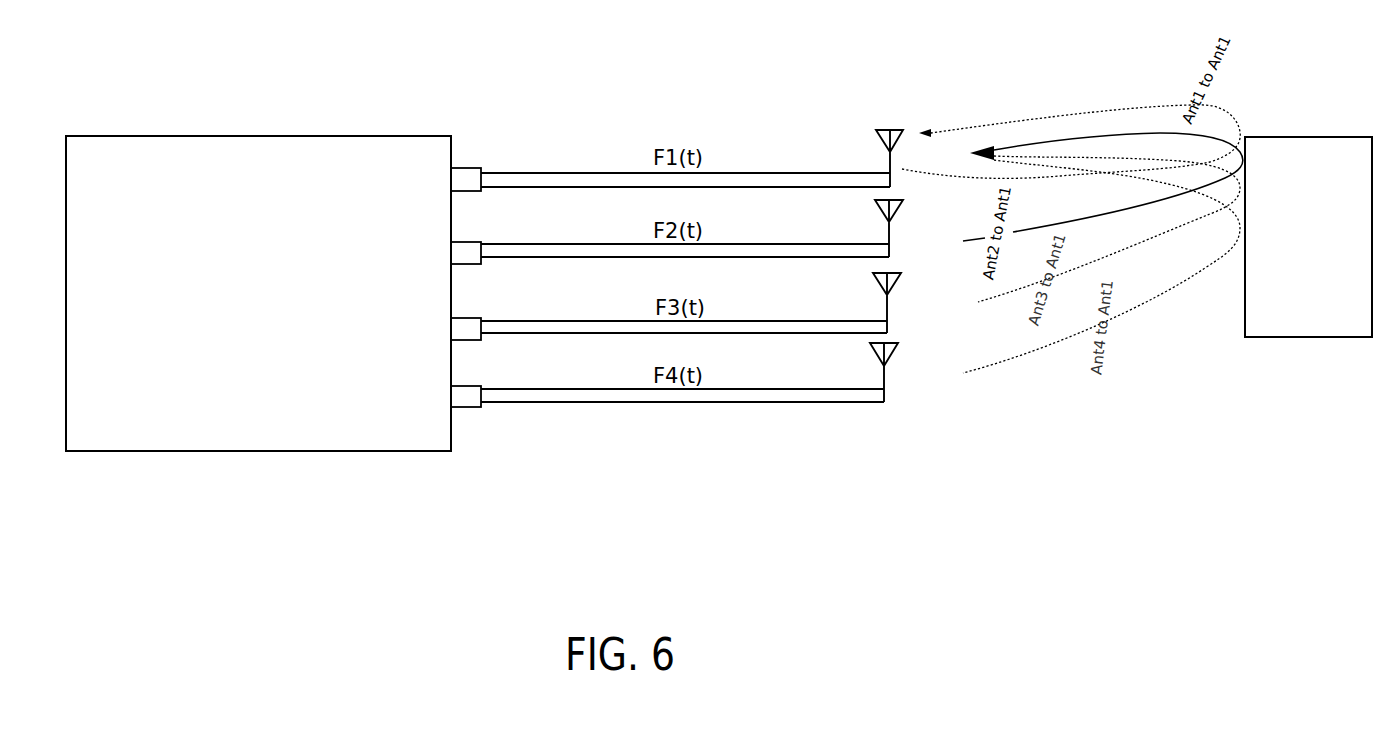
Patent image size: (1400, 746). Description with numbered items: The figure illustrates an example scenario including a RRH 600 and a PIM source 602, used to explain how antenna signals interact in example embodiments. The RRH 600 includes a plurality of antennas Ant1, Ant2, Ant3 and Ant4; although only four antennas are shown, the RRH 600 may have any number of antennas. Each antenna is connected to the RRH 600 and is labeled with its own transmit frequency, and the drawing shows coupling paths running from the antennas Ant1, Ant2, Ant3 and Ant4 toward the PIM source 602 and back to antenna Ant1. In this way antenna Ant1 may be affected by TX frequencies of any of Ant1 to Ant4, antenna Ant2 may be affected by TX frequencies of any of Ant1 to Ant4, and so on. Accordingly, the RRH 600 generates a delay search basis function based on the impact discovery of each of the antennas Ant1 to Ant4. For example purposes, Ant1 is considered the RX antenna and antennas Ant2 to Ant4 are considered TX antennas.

The RRH 600 is at (274, 327).
The PIM source 602 is at (1294, 256).
The antenna Ant1 is at (915, 158).
The antenna Ant2 is at (915, 228).
The antenna Ant3 is at (913, 303).
The antenna Ant4 is at (910, 372).